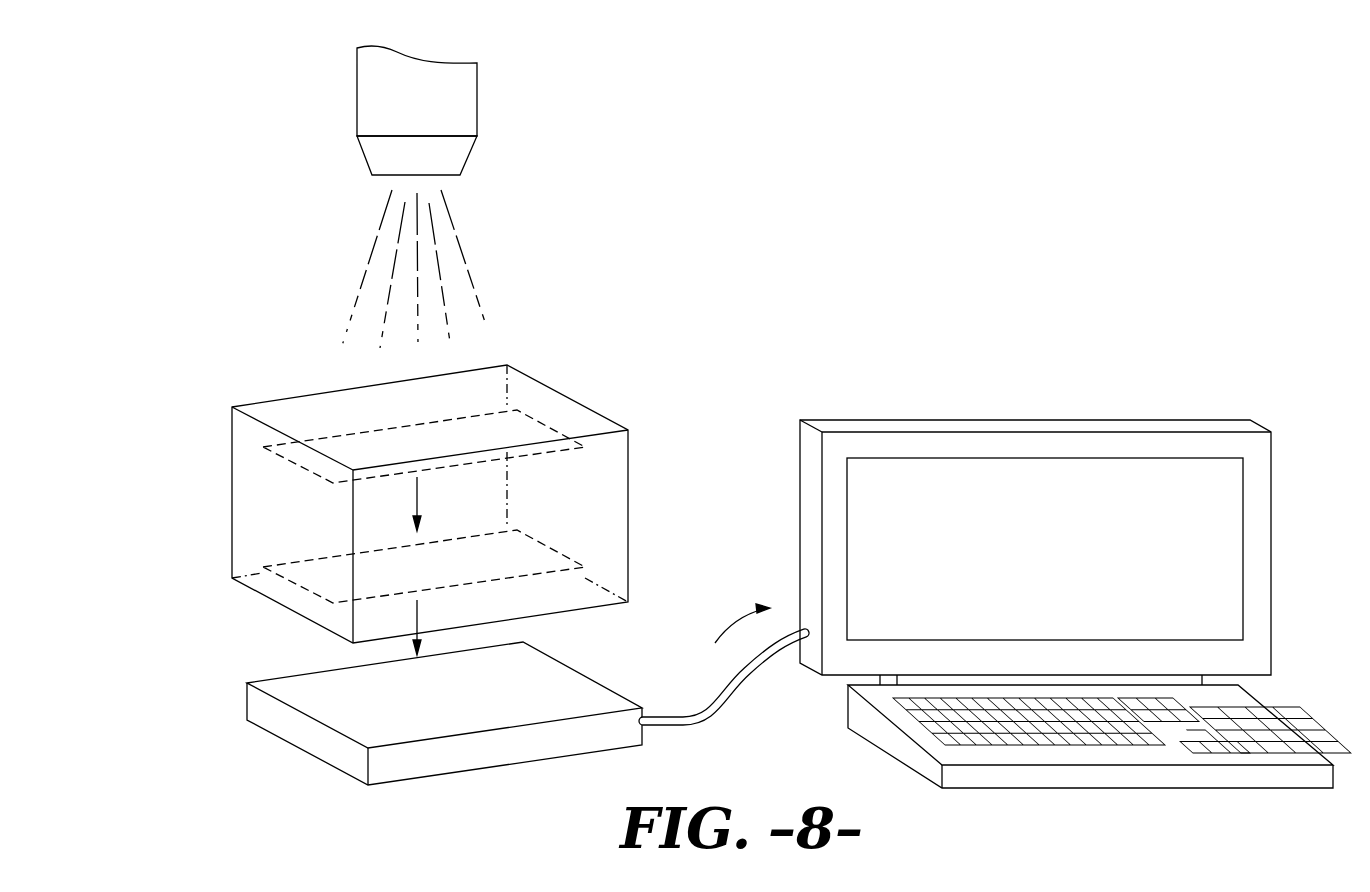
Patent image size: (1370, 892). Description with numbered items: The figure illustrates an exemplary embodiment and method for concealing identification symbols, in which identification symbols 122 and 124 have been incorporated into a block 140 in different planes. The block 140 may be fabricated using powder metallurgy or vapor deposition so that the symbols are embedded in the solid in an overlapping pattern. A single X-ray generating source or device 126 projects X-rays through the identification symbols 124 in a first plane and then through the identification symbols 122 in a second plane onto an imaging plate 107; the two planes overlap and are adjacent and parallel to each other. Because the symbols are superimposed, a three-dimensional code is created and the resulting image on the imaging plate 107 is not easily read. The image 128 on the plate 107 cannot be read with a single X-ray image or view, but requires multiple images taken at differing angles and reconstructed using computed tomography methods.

The imaging plate 107 is at (298, 727).
The identification symbols 122 is at (330, 578).
The identification symbols 124 is at (522, 430).
The X-ray generating source or device 126 is at (370, 103).
The captured characters 128 is at (563, 690).
The block 140 is at (232, 490).